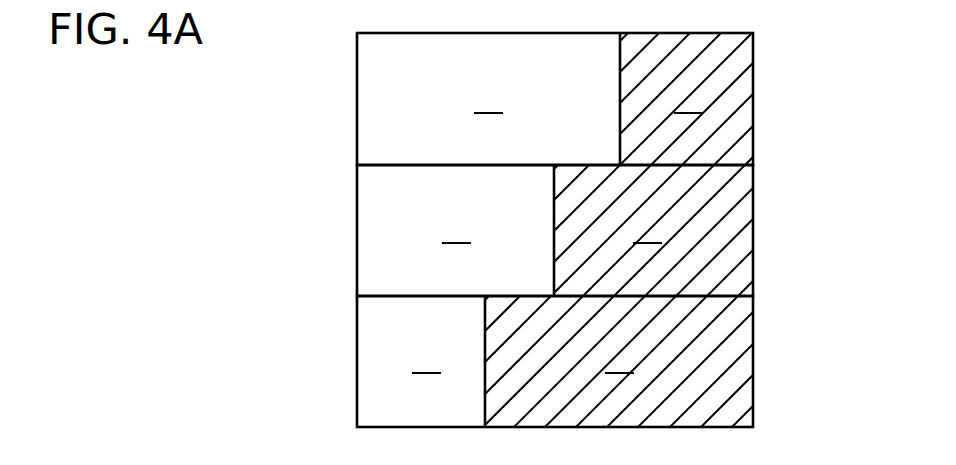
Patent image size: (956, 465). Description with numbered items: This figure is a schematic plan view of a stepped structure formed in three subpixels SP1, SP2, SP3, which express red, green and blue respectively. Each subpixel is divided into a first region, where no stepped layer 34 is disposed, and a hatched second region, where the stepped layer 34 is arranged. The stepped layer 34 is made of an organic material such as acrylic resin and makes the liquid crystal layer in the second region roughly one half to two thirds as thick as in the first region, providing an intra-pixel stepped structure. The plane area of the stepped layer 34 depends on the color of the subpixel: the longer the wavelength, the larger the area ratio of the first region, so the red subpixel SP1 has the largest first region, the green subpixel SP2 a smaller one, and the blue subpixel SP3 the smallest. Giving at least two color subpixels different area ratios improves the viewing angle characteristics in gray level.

The stepped layer 34 is at (576, 232).
The subpixel SP1 is at (353, 98).
The subpixel SP2 is at (346, 242).
The subpixel SP3 is at (349, 372).